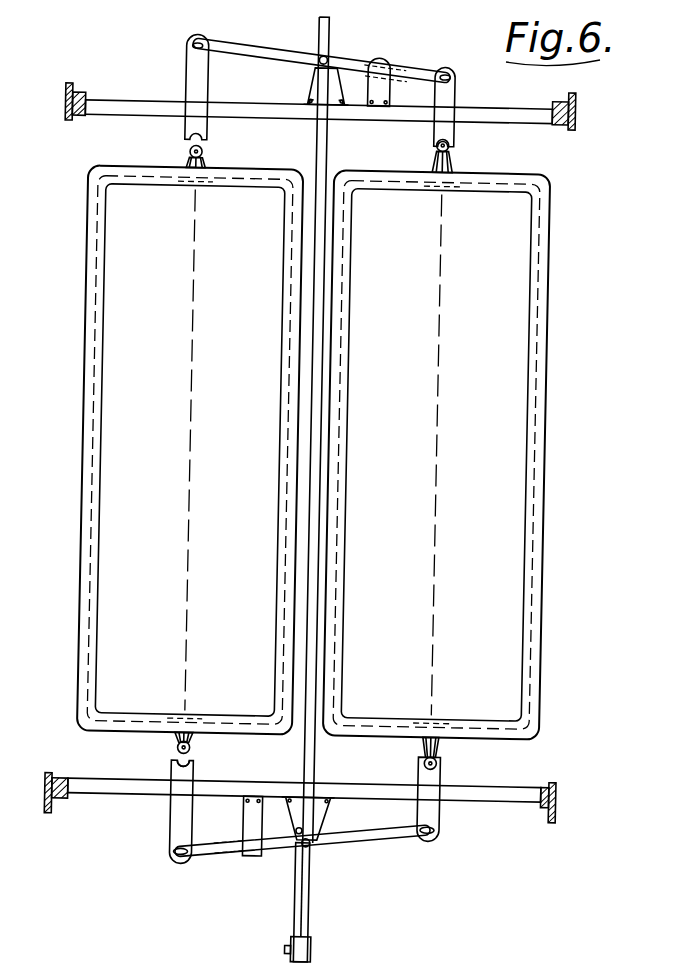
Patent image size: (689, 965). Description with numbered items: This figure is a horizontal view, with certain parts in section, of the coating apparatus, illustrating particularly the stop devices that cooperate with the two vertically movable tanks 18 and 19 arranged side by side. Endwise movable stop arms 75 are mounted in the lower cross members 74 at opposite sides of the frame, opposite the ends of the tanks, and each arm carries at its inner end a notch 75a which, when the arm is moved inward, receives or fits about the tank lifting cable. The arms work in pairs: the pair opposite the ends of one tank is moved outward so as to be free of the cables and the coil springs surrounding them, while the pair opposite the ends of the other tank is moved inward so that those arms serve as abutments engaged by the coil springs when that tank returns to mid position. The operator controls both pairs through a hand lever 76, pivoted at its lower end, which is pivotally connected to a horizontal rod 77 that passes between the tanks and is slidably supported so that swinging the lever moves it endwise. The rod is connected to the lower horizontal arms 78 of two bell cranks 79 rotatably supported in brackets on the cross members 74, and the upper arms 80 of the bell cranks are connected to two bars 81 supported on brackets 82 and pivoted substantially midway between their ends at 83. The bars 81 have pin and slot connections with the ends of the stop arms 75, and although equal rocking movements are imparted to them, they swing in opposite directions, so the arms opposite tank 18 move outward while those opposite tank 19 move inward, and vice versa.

The tank 18 is at (99, 676).
The tank 19 is at (535, 611).
The lower cross member 74 is at (114, 812).
The stop arm 75 is at (178, 80).
The notch 75a is at (198, 768).
The hand lever 76 is at (320, 948).
The horizontal rod 77 is at (317, 490).
The lower horizontal arm 78 is at (303, 831).
The bell crank 79 is at (256, 859).
The upper arm 80 is at (356, 56).
The bar 81 is at (254, 54).
The bracket 82 is at (300, 80).
The pivot 83 is at (318, 55).